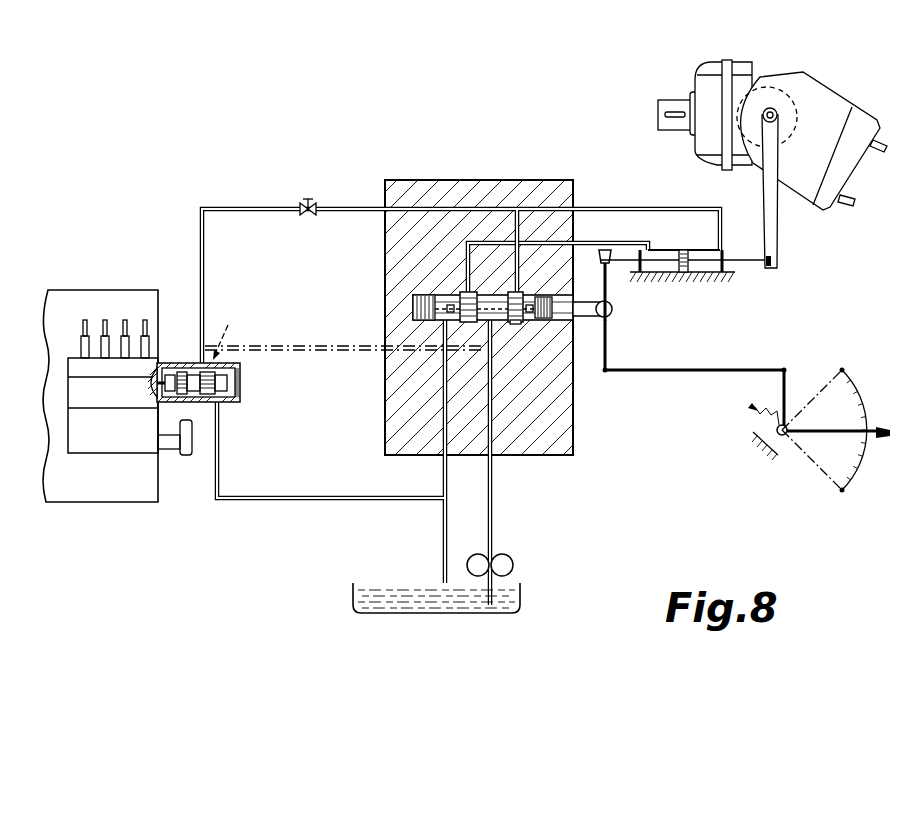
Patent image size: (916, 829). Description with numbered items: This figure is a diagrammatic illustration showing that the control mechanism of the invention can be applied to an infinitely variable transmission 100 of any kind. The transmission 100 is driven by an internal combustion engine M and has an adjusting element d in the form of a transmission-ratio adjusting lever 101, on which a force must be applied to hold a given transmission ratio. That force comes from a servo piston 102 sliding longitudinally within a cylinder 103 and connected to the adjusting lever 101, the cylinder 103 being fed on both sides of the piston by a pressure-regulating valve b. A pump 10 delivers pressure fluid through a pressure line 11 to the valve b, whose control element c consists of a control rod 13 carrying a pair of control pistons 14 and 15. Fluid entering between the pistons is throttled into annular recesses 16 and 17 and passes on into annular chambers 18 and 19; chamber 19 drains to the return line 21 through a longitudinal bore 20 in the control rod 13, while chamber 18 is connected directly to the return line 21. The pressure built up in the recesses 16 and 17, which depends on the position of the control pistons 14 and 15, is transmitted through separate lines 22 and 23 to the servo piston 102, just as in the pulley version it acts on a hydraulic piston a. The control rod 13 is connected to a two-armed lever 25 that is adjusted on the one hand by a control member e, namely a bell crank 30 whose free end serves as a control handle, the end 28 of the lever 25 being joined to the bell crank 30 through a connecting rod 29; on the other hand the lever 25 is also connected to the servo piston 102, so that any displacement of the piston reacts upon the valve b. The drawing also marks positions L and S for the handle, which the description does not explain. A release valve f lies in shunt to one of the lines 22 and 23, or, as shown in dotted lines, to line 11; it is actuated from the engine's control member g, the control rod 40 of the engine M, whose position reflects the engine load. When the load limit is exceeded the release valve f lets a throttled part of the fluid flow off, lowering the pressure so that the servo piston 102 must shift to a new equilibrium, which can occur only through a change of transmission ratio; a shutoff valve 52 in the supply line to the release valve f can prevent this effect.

The pump 10 is at (503, 561).
The pressure line 11 is at (495, 402).
The control rod 13 is at (580, 322).
The control piston 14 is at (478, 288).
The control piston 15 is at (512, 290).
The annular recess 16 is at (453, 287).
The annular recess 17 is at (525, 290).
The annular chamber 18 is at (443, 293).
The annular chamber 19 is at (552, 290).
The longitudinal bore 20 is at (448, 341).
The return line 21 is at (448, 391).
The pressure line 22 is at (465, 290).
The pressure line 23 is at (520, 288).
The two-armed lever 25 is at (607, 334).
The lever end 28 is at (607, 372).
The connecting rod 29 is at (696, 370).
The bell crank 30 is at (789, 382).
The control rod 40 is at (150, 388).
The shutoff valve 52 is at (313, 205).
The infinitely variable transmission 100 is at (830, 104).
The transmission-ratio adjusting lever 101 is at (776, 262).
The servo piston 102 is at (684, 250).
The cylinder 103 is at (725, 256).
The hydraulic piston a is at (647, 243).
The pressure-regulating valve b is at (517, 322).
The control element c is at (610, 302).
The control element d is at (780, 226).
The control member e is at (805, 431).
The release valve f is at (223, 336).
The control member g is at (160, 364).
The load position L is at (824, 423).
The idle position S is at (820, 467).
The internal combustion engine M is at (117, 396).